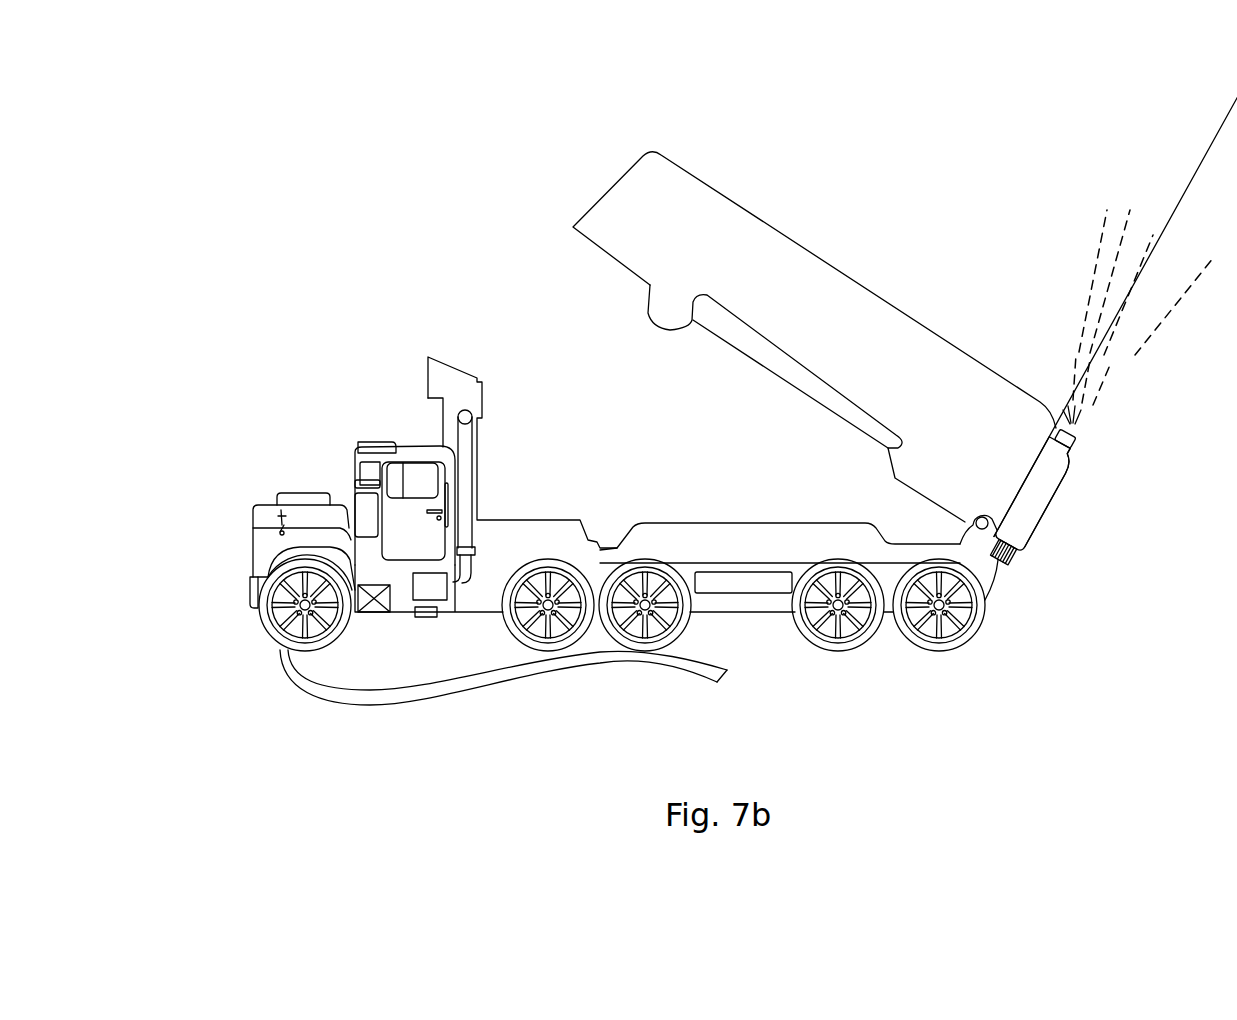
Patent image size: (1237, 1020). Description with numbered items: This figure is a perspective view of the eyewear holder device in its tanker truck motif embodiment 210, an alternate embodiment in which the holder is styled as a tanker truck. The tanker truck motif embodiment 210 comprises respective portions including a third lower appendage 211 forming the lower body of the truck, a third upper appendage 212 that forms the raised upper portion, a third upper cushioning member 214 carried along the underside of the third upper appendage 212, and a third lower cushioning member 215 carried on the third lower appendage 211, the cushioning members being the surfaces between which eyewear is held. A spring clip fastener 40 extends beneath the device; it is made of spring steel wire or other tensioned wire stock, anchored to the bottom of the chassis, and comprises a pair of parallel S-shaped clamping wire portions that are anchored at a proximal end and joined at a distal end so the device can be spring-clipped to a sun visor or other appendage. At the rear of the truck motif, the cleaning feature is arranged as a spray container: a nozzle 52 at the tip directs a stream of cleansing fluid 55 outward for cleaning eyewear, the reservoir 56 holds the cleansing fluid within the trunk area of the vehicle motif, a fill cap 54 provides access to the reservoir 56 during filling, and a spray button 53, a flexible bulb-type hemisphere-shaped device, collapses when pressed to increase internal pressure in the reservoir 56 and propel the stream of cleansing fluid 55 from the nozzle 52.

The tanker truck motif embodiment 210 is at (250, 155).
The third upper appendage 212 is at (738, 248).
The third upper cushioning member 214 is at (738, 330).
The third lower cushioning member 215 is at (710, 538).
The third lower appendage 211 is at (733, 603).
The spring clip fastener 40 is at (408, 690).
The nozzle 52 is at (1080, 436).
The spray button 53 is at (1047, 522).
The fill cap 54 is at (1005, 560).
The stream of cleansing fluid 55 is at (1070, 395).
The reservoir 56 is at (1072, 478).